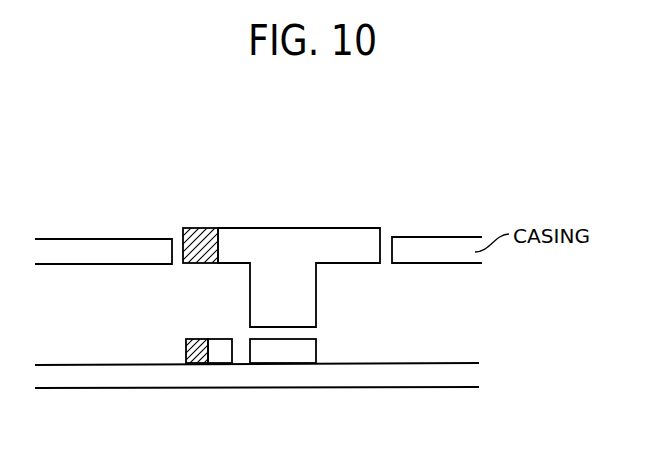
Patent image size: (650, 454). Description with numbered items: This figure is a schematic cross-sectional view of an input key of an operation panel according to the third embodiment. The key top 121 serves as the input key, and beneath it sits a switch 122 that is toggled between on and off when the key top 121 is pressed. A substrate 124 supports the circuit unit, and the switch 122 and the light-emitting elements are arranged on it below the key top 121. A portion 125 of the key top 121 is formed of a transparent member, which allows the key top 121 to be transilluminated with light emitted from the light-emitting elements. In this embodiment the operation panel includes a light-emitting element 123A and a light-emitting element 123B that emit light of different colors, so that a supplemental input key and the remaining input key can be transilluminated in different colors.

The key top 121 is at (292, 228).
The switch 122 is at (316, 352).
The light-emitting element 123A is at (219, 363).
The light-emitting element 123B is at (185, 356).
The substrate 124 is at (475, 375).
The portion of the key top 125 is at (201, 228).